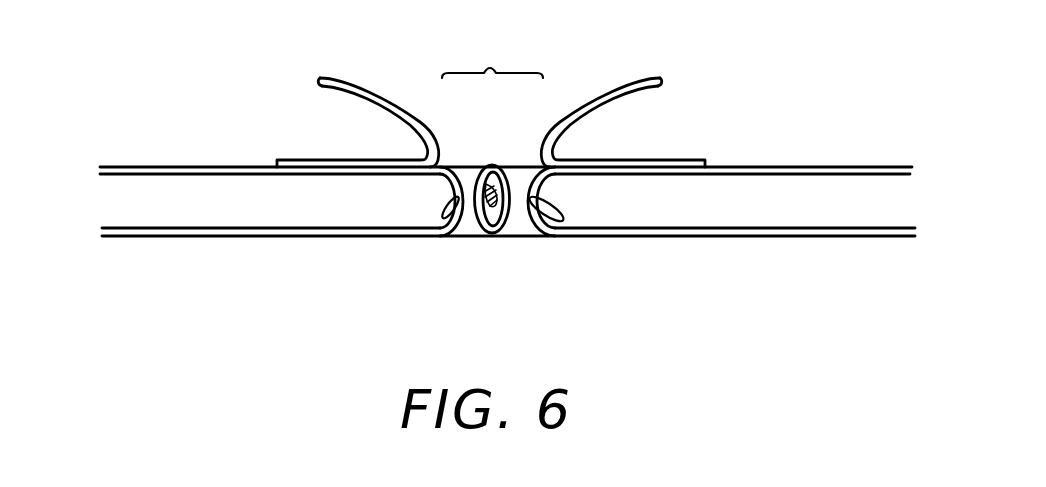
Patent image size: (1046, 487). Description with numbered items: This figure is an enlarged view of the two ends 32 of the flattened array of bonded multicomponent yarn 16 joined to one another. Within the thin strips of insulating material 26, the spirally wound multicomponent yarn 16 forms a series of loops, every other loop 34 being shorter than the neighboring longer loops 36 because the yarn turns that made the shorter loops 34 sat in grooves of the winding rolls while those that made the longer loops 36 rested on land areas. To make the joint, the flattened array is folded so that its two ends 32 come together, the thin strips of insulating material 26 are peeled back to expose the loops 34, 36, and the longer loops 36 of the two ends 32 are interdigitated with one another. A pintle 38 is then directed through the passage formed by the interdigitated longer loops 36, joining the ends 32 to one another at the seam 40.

The multicomponent yarn 16 is at (208, 167).
The thin strips of insulating material 26 is at (366, 88).
The ends of the flattened array 32 is at (303, 238).
The shorter loops 34 is at (445, 223).
The longer loops 36 is at (505, 237).
The pintle 38 is at (493, 184).
The seam 40 is at (492, 51).